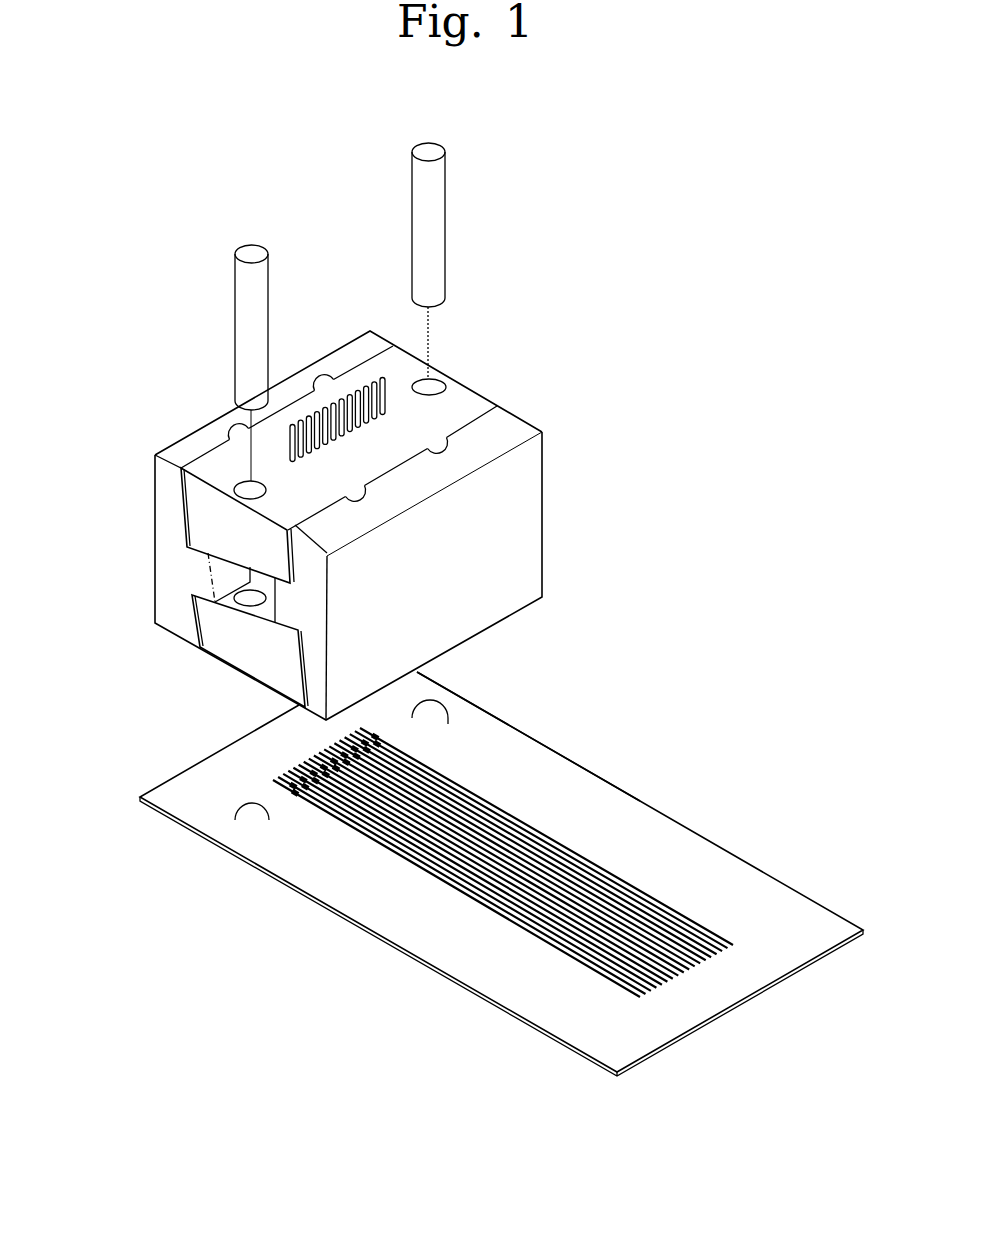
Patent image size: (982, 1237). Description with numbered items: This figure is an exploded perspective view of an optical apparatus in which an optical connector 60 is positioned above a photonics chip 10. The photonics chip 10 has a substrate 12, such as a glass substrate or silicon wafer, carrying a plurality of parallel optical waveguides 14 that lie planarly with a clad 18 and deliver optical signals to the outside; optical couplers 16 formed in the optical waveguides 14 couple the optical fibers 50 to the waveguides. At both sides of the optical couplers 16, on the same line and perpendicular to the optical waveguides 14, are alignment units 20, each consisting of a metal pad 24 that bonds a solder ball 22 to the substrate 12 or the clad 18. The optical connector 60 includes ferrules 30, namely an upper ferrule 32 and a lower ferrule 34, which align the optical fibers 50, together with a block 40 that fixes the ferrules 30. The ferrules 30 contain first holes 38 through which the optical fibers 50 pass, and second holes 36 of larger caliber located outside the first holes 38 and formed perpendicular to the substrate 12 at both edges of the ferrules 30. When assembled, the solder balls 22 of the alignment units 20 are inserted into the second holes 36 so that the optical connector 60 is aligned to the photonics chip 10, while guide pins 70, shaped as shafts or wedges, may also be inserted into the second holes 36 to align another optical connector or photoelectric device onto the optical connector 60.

The photonics chip 10 is at (501, 874).
The substrate 12 is at (752, 866).
The optical waveguides 14 is at (620, 880).
The optical couplers 16 is at (293, 775).
The clad 18 is at (605, 792).
The alignment units 20 is at (491, 687).
The solder ball 22 is at (430, 702).
The pad 24 is at (450, 703).
The ferrules 30 is at (185, 558).
The upper ferrule 32 is at (198, 523).
The lower ferrule 34 is at (204, 651).
The second holes 36 is at (437, 385).
The first holes 38 is at (390, 398).
The block 40 is at (167, 487).
The optical fibers 50 is at (370, 383).
The optical connector 60 is at (302, 499).
The guide pins 70 is at (435, 218).